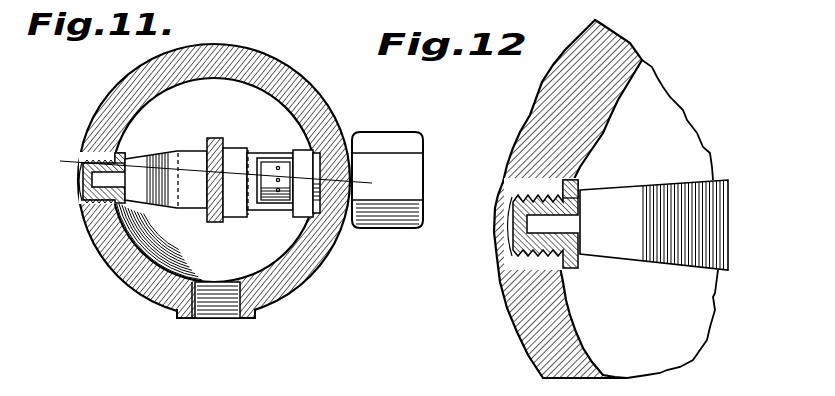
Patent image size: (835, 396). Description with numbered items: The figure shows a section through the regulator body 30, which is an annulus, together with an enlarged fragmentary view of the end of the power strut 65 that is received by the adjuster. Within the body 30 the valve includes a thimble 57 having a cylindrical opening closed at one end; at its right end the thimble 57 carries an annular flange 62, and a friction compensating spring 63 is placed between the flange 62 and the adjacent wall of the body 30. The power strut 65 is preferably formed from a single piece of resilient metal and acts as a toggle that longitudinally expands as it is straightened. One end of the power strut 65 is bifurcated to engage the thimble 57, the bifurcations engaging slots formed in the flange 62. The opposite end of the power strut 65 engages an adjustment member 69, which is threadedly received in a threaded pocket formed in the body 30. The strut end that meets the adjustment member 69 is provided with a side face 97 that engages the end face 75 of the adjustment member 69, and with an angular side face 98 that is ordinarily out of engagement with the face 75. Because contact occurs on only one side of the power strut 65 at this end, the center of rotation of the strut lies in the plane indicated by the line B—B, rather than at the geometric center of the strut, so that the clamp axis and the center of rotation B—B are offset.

In FIG. 11, the body 30 is at (181, 82).
In FIG. 12, the body 30 is at (588, 328).
In FIG. 11, the adjustment member 69 is at (124, 153).
In FIG. 12, the adjustment member 69 is at (567, 179).
In FIG. 11, the end face 75 is at (127, 162).
In FIG. 12, the end face 75 is at (581, 189).
In FIG. 11, the power strut 65 is at (252, 152).
In FIG. 12, the power strut 65 is at (690, 181).
In FIG. 11, the annular flange 62 is at (305, 151).
In FIG. 11, the thimble 57 is at (268, 198).
In FIG. 11, the friction compensating spring 63 is at (312, 212).
In FIG. 11, the angular side face 98 is at (125, 204).
In FIG. 12, the angular side face 98 is at (580, 262).
In FIG. 12, the side face 97 is at (577, 221).
In FIG. 11, the line B— B is at (214, 174).